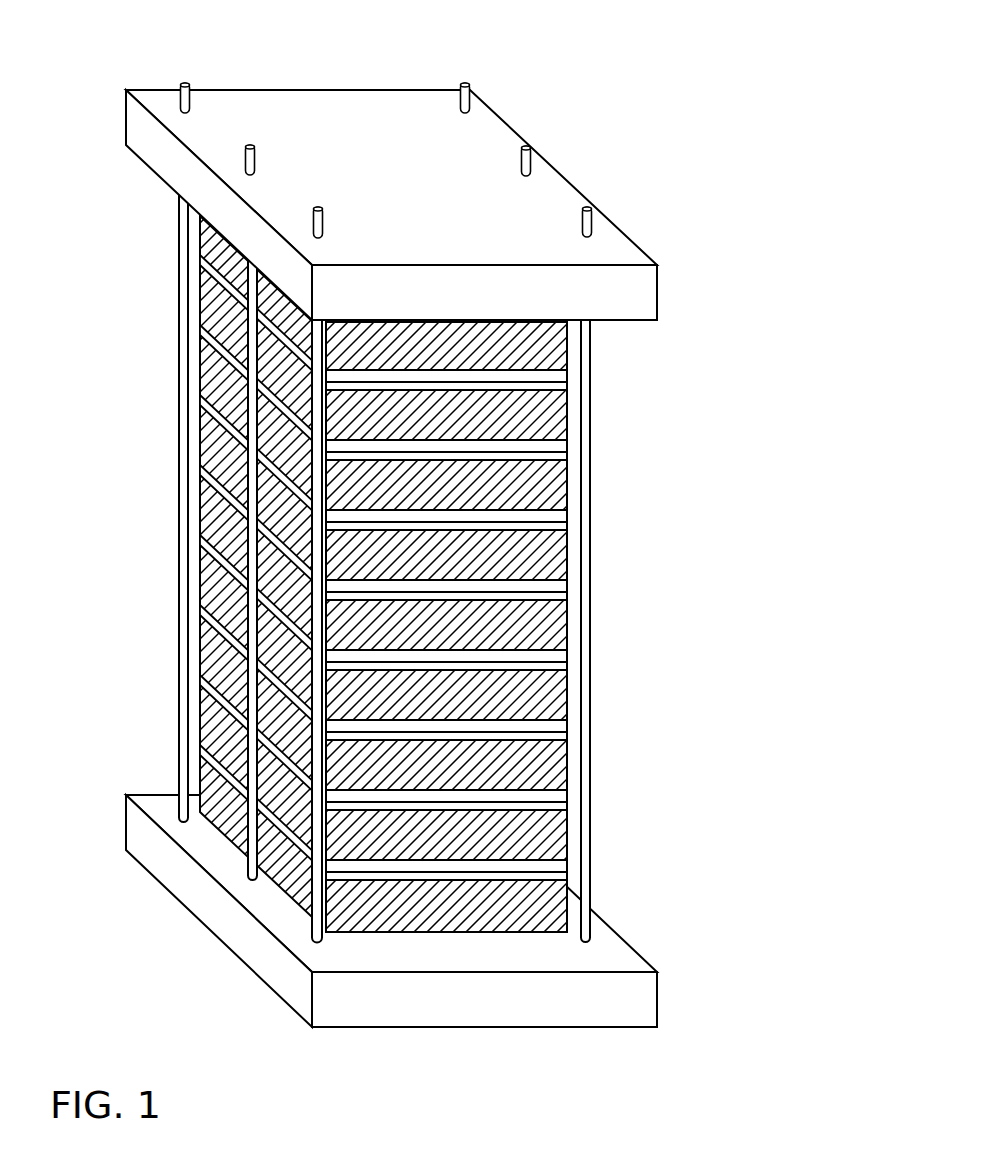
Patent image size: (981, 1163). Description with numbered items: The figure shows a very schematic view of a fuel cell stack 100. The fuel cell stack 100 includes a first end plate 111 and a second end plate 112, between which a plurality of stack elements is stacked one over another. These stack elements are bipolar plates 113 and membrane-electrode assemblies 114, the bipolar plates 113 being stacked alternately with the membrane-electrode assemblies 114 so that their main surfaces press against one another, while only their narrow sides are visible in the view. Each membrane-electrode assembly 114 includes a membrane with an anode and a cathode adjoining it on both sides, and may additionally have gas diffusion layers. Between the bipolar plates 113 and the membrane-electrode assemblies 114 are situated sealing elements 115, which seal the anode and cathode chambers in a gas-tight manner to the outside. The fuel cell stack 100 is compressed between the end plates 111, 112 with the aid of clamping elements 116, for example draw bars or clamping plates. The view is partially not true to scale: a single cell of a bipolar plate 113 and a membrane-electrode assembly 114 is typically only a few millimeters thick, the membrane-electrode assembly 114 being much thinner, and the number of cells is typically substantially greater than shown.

The fuel cell stack 100 is at (600, 105).
The first end plate 111 is at (193, 887).
The second end plate 112 is at (322, 110).
The bipolar plate 113 is at (212, 507).
The membrane-electrode assembly 114 is at (217, 556).
The sealing element 115 is at (208, 543).
The clamping element 116 is at (184, 302).